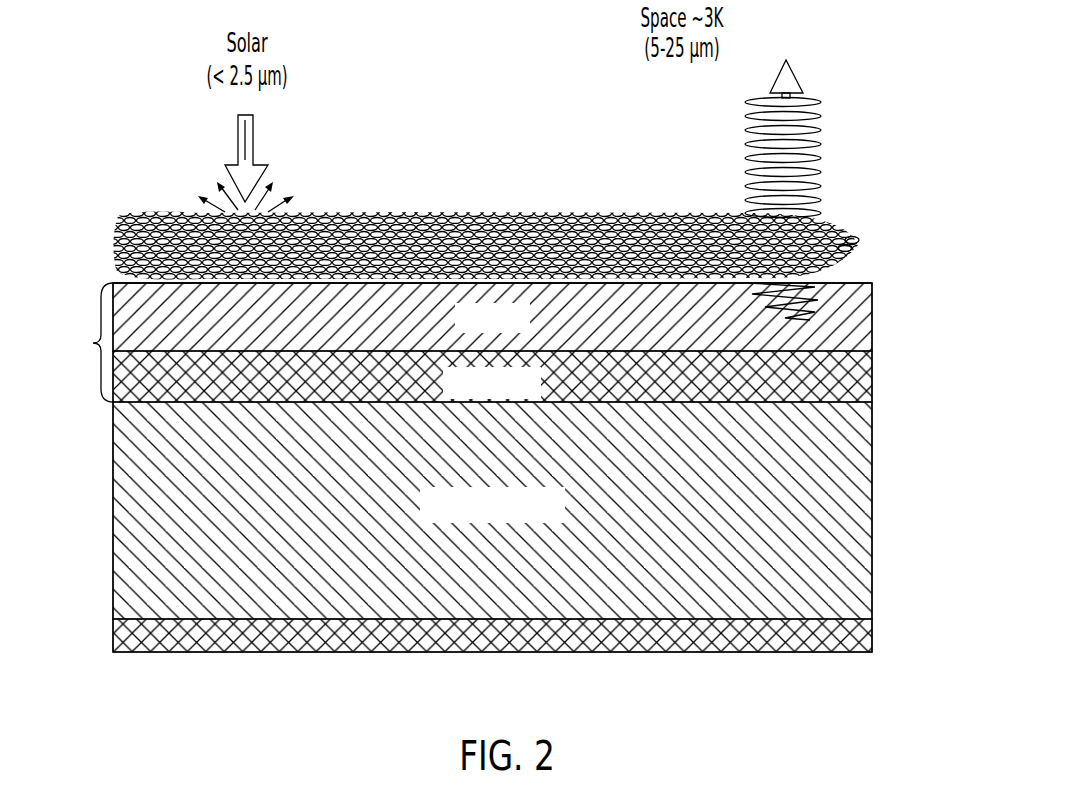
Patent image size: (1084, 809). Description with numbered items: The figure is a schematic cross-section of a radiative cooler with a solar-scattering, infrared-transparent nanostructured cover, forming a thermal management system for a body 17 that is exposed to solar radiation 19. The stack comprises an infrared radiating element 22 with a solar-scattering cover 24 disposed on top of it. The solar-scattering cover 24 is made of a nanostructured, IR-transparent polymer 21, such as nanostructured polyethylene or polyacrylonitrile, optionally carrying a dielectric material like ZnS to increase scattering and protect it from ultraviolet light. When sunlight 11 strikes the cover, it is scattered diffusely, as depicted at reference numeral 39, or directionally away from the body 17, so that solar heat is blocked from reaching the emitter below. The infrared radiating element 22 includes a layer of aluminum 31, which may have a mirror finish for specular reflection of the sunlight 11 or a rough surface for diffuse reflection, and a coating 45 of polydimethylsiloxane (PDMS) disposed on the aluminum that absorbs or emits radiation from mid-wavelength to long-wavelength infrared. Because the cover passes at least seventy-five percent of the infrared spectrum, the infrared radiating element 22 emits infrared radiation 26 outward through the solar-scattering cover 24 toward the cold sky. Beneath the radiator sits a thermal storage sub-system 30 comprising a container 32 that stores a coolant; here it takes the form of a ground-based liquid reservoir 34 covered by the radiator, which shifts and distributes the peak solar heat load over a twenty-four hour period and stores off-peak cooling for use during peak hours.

The sunlight 11 is at (252, 152).
The body 17 is at (78, 303).
The solar radiation 19 is at (239, 140).
The nanostructured, IR-transparent polymer 21 is at (122, 236).
The infrared radiating element 22 is at (88, 342).
The solar-scattering cover 24 is at (858, 246).
The infrared radiation 26 is at (817, 143).
The thermal storage sub-system 30 is at (882, 480).
The layer of aluminum 31 is at (845, 384).
The container 32 is at (872, 538).
The ground-based liquid reservoir 34 is at (845, 450).
The diffuse scattering of sunlight 39 is at (236, 211).
The coating 45 is at (862, 325).